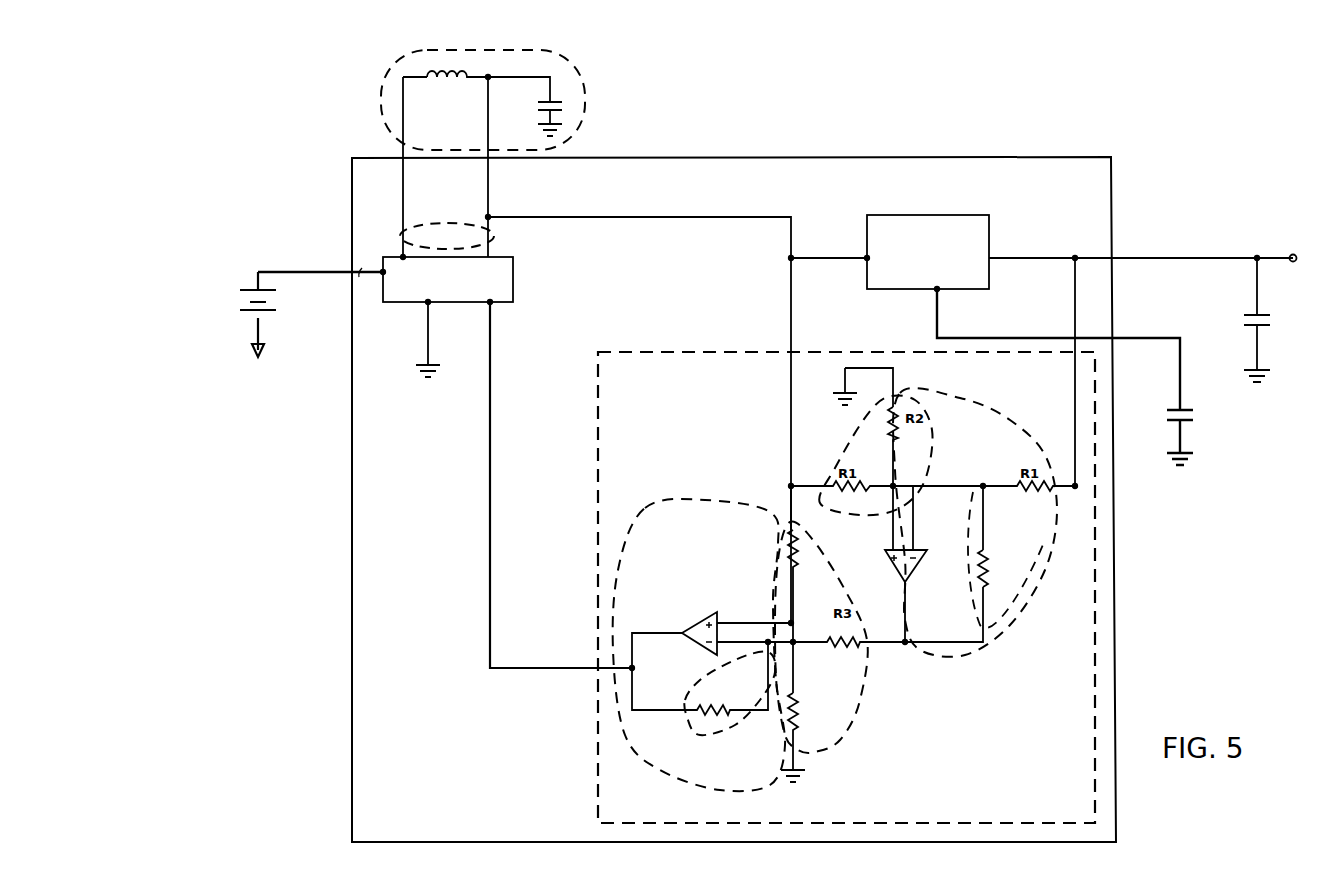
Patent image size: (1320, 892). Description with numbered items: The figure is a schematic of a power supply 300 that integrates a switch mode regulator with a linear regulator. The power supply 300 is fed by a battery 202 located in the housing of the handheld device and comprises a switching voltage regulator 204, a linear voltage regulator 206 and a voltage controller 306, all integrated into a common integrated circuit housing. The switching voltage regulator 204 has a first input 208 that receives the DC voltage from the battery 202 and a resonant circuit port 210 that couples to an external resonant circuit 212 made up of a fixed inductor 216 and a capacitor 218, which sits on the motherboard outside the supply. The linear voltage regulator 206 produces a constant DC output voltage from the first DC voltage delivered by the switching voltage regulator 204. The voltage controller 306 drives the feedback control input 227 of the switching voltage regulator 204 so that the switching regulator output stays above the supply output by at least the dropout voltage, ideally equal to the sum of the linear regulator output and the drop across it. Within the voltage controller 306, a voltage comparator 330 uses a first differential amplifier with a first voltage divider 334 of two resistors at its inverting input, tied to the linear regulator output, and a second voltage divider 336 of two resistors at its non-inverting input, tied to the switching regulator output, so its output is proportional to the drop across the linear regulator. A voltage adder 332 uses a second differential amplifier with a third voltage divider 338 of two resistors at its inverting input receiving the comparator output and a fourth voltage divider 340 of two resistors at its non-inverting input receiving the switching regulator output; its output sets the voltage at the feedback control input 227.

The battery 202 is at (241, 271).
The switching voltage regulator 204 is at (515, 290).
The linear voltage regulator 206 is at (965, 215).
The first input 208 is at (381, 168).
The resonant circuit port 210 is at (500, 237).
The resonant circuit 212 is at (489, 89).
The fixed inductor 216 is at (442, 84).
The capacitor 218 is at (538, 107).
The feedback control input 227 is at (492, 320).
The power supply 300 is at (767, 155).
The voltage controller 306 is at (720, 352).
The voltage comparator 330 is at (985, 652).
The voltage adder 332 is at (846, 745).
The first voltage divider 334 is at (962, 466).
The second voltage divider 336 is at (914, 465).
The third voltage divider 338 is at (700, 725).
The fourth voltage divider 340 is at (702, 645).